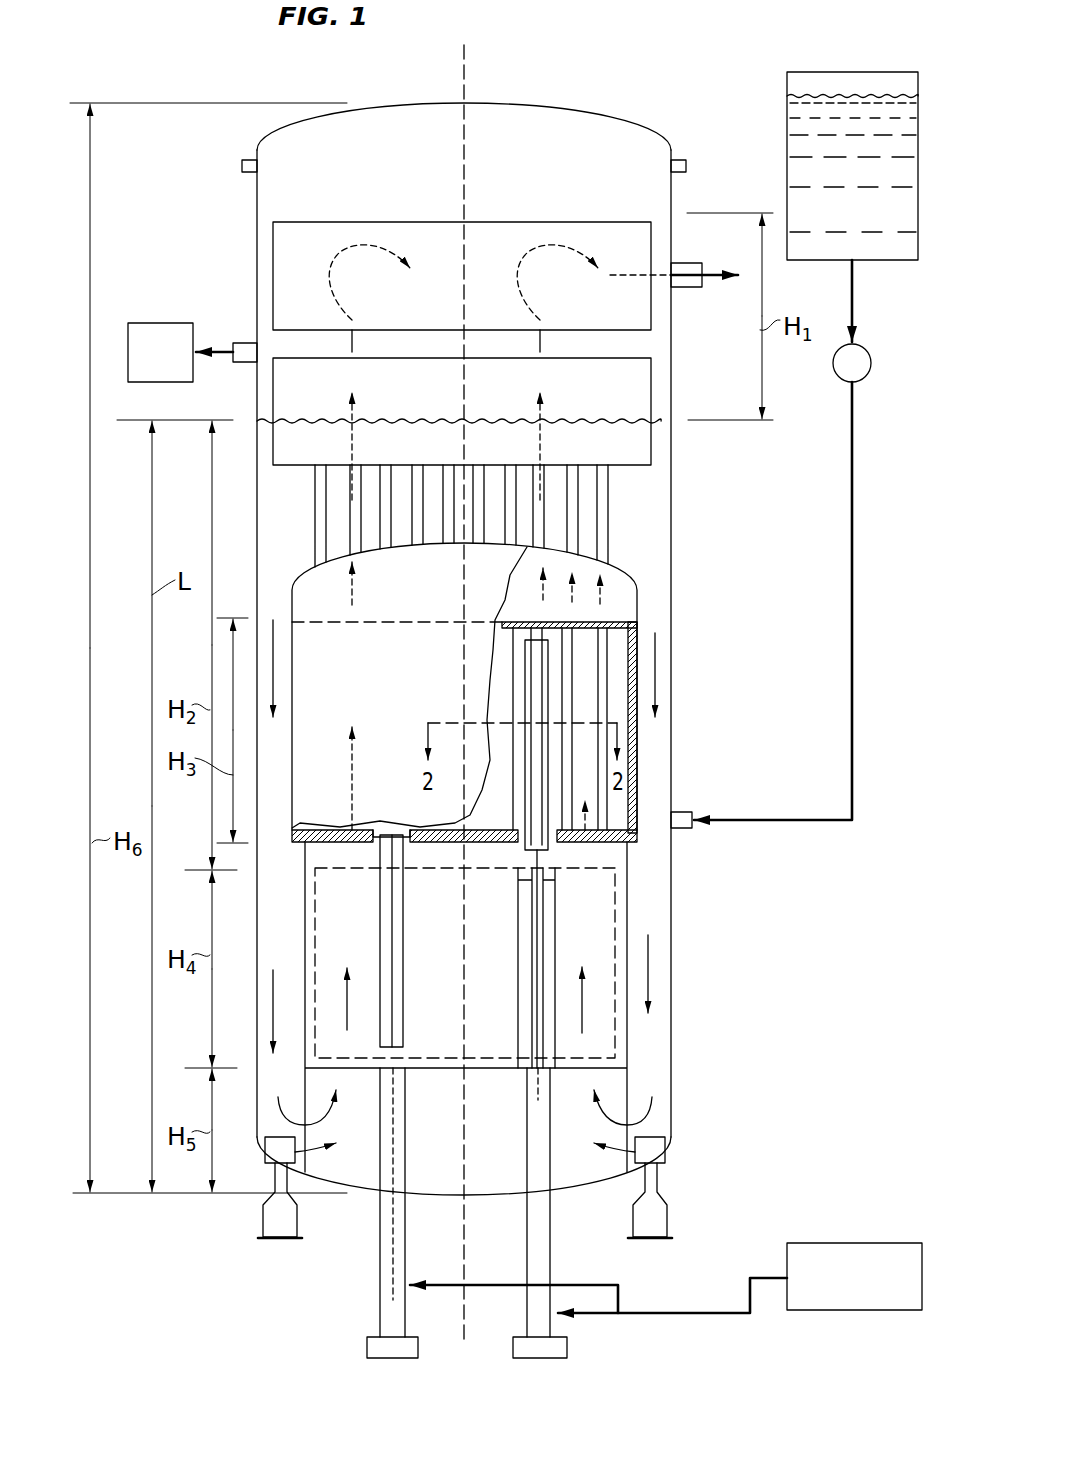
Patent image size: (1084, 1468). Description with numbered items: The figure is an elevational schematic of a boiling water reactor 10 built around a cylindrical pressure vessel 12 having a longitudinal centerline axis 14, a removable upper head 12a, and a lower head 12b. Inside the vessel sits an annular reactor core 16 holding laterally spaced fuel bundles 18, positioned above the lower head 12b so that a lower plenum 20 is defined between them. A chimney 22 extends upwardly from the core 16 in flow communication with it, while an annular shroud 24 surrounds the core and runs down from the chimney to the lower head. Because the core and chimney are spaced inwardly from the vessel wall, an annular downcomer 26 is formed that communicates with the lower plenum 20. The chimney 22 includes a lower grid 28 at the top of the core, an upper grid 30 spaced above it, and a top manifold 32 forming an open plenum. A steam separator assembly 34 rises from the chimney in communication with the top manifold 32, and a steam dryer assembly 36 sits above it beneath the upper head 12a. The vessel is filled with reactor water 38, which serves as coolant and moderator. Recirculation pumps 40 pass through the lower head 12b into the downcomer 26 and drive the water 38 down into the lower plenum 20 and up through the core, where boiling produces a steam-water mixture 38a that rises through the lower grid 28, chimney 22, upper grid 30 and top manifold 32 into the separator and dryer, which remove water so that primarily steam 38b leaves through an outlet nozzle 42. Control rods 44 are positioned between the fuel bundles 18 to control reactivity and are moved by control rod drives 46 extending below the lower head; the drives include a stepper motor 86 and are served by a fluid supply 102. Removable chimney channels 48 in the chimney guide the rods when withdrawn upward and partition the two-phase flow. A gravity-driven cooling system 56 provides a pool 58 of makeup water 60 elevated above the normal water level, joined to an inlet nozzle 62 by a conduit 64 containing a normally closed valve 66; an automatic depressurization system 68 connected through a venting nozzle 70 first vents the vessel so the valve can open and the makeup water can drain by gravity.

The boiling water reactor 10 is at (483, 656).
The pressure vessel 12 is at (671, 212).
The upper head 12a is at (580, 111).
The lower head 12b is at (577, 1188).
The longitudinal centerline axis 14 is at (464, 86).
The reactor core 16 is at (615, 1018).
The fuel bundles 18 is at (518, 965).
The lower plenum 20 is at (452, 1151).
The chimney 22 is at (637, 738).
The shroud 24 is at (627, 1050).
The downcomer 26 is at (295, 924).
The lower grid 28 is at (622, 812).
The upper grid 30 is at (615, 628).
The top manifold 32 is at (612, 566).
The steam separator assembly 34 is at (636, 470).
The steam dryer assembly 36 is at (651, 312).
The reactor water 38 is at (638, 412).
The steam-water mixture 38a is at (545, 585).
The steam 38b is at (535, 245).
The recirculation pumps 40 is at (667, 1217).
The outlet nozzle 42 is at (690, 263).
The control rods 44 is at (525, 668).
The control rod drives 46 is at (523, 1232).
The chimney channels 48 is at (618, 692).
The gravity-driven cooling system 56 is at (880, 377).
The pool 58 is at (918, 120).
The makeup water 60 is at (800, 120).
The inlet nozzle 62 is at (690, 830).
The conduit 64 is at (857, 670).
The valve 66 is at (865, 348).
The automatic depressurization system 68 is at (157, 323).
The venting nozzle 70 is at (245, 343).
The stepper motor 86 is at (418, 1342).
The fluid supply 102 is at (865, 1243).